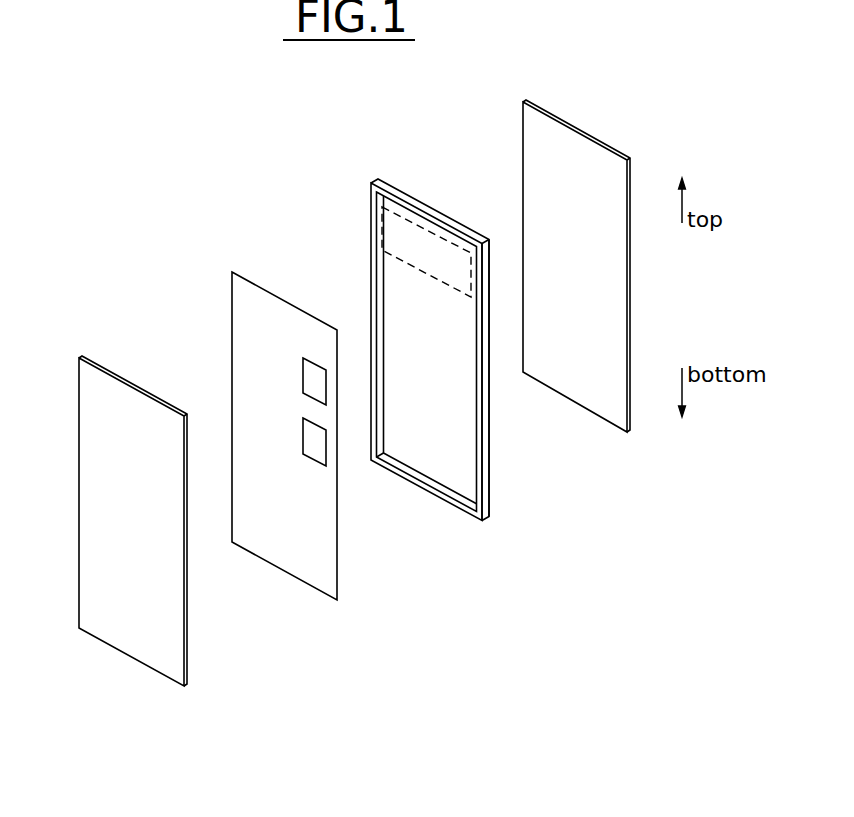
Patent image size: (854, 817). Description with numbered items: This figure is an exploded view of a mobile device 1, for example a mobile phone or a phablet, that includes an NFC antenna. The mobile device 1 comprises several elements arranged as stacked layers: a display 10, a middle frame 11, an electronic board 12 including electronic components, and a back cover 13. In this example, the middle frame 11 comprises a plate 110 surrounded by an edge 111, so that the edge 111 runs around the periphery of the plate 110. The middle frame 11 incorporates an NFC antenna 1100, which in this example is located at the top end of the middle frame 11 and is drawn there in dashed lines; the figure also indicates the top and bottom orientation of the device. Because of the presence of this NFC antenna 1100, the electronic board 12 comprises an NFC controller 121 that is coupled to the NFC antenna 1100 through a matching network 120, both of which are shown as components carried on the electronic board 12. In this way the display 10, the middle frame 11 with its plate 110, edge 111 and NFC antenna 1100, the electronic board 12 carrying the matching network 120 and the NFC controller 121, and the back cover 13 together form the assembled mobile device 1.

The mobile device 1 is at (170, 157).
The display 10 is at (581, 128).
The middle frame 11 is at (434, 208).
The plate 110 is at (437, 432).
The edge 111 is at (480, 468).
The NFC antenna 1100 is at (391, 231).
The electronic board 12 is at (283, 300).
The matching network 120 is at (313, 384).
The NFC controller 121 is at (313, 444).
The back cover 13 is at (135, 388).